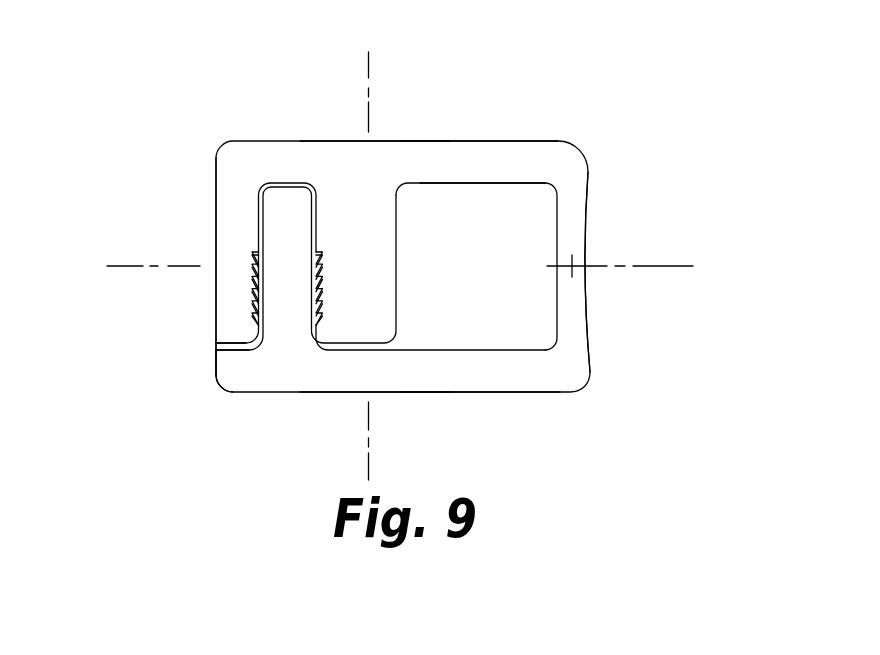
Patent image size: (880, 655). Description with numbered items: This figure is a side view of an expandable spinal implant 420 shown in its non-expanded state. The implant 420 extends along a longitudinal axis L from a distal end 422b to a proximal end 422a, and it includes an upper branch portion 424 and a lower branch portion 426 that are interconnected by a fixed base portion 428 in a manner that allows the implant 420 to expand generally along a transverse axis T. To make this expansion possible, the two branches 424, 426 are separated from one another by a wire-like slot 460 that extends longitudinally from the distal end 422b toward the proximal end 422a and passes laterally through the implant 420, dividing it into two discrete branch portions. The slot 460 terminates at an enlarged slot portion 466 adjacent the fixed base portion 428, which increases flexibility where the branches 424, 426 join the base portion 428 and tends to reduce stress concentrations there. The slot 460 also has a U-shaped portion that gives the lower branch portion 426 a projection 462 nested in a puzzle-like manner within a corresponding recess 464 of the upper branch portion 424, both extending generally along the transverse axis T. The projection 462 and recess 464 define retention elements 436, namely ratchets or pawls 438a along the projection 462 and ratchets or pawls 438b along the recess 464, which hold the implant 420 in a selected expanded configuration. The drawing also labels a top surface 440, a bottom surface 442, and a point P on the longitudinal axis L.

The expandable spinal implant 420 is at (272, 66).
The proximal end 422a is at (621, 168).
The distal end 422b is at (199, 228).
The upper branch portion 424 is at (510, 128).
The lower branch portion 426 is at (352, 397).
The fixed base portion 428 is at (573, 305).
The retention elements 436 is at (249, 302).
The ratchets/pawls 438a is at (256, 285).
The ratchets/pawls 438b is at (323, 258).
The top surface 440 is at (418, 141).
The bottom surface 442 is at (427, 393).
The slot 460 is at (233, 356).
The projection 462 is at (294, 203).
The recess 464 is at (262, 229).
The enlarged slot portion 466 is at (534, 183).
The transverse axis T is at (369, 65).
The longitudinal axis L is at (663, 266).
The pivot point P is at (579, 266).